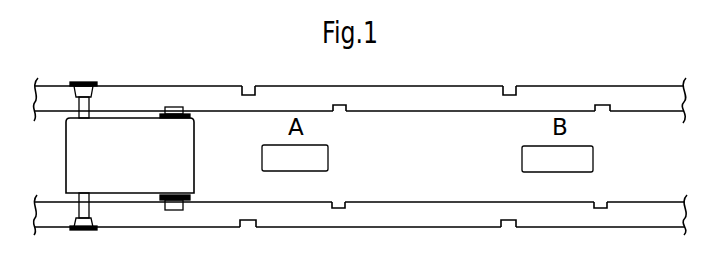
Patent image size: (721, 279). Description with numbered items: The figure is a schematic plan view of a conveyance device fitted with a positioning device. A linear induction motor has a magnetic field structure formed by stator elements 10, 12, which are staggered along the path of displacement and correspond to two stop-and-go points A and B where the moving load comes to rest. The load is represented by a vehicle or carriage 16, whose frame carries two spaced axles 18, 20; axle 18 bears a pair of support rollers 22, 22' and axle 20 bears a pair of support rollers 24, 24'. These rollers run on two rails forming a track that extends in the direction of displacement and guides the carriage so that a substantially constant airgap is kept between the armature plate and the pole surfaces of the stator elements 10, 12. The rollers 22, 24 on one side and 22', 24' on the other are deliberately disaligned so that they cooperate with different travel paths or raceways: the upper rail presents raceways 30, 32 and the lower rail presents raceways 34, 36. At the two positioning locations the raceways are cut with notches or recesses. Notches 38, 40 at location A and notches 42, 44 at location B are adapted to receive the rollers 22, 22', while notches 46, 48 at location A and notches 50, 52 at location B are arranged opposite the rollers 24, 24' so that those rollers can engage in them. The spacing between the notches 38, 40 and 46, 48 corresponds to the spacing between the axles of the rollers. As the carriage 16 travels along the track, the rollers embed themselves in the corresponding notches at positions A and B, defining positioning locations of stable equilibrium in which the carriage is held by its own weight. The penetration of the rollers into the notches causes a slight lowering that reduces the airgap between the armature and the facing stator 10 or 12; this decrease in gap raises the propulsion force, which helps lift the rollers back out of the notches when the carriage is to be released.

The stator element 10 is at (304, 168).
The stator element 12 is at (567, 168).
The carriage 16 is at (143, 163).
The axle 18 is at (78, 199).
The axle 20 is at (173, 196).
The support roller 22 is at (95, 82).
The support roller 22' is at (77, 243).
The support roller 24 is at (188, 82).
The support roller 24' is at (180, 234).
The raceway 30 is at (665, 93).
The raceway 32 is at (664, 105).
The raceway 34 is at (666, 208).
The raceway 36 is at (669, 222).
The notch 38 is at (255, 87).
The notch 40 is at (247, 227).
The notch 42 is at (512, 88).
The notch 44 is at (508, 227).
The notch 46 is at (338, 112).
The notch 48 is at (338, 205).
The notch 50 is at (603, 109).
The notch 52 is at (603, 205).